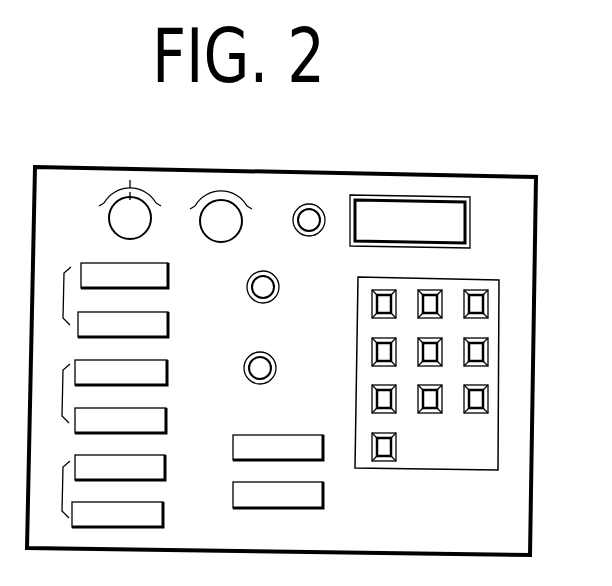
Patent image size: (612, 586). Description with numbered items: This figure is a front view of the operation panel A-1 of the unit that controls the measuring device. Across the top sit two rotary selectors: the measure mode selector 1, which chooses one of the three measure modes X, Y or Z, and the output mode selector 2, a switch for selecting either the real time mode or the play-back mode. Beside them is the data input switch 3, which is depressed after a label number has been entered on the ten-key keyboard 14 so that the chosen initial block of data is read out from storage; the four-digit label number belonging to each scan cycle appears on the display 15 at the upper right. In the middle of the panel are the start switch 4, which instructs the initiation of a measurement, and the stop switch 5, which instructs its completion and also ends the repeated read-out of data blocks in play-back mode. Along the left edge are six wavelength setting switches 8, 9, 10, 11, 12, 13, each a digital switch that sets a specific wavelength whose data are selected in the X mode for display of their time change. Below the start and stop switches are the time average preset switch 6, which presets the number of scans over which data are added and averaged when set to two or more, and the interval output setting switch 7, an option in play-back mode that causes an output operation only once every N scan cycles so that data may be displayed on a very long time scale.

The operation panel A-1 is at (399, 175).
The measure mode selector 1 is at (142, 220).
The output mode selector 2 is at (236, 226).
The data input switch 3 is at (312, 236).
The start switch 4 is at (248, 286).
The stop switch 5 is at (245, 368).
The time average preset switch 6 is at (278, 447).
The interval output setting switch 7 is at (278, 495).
The wavelength setting switch 8 is at (115, 294).
The wavelength setting switch 9 is at (123, 324).
The wavelength setting switch 10 is at (114, 391).
The wavelength setting switch 11 is at (120, 420).
The wavelength setting switch 12 is at (113, 486).
The wavelength setting switch 13 is at (117, 514).
The ten-key keyboard 14 is at (440, 463).
The display 15 is at (457, 216).